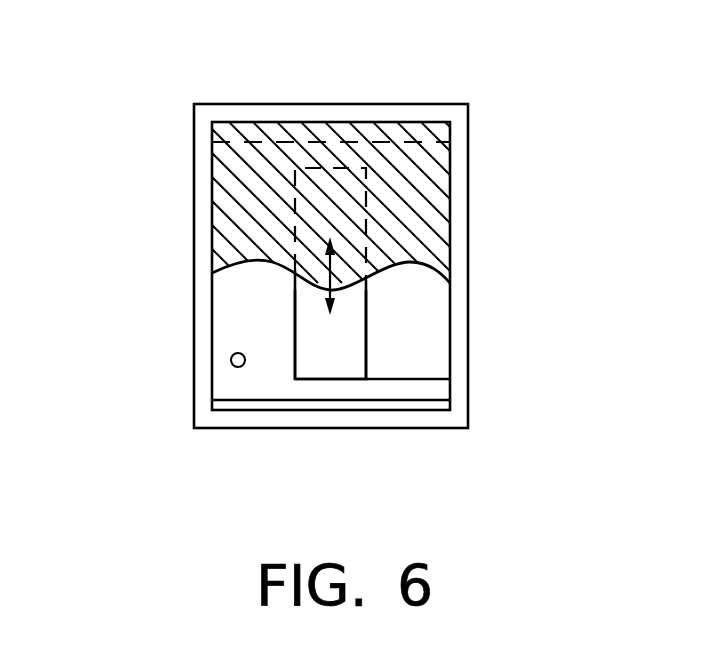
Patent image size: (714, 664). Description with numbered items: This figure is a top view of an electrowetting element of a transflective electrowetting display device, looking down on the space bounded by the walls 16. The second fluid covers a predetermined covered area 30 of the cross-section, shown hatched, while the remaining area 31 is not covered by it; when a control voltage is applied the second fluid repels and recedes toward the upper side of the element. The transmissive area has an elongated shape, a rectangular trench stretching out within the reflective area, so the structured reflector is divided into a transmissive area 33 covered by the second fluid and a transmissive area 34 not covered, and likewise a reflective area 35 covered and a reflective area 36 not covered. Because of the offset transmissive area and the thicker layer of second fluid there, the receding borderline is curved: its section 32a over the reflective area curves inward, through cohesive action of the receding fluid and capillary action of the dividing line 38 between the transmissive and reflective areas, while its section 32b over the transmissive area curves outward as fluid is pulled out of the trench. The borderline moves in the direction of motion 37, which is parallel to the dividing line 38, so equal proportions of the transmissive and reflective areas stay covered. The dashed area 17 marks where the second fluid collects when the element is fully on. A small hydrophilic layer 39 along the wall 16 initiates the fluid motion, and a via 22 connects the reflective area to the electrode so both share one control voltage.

The walls 16 is at (458, 138).
The collection area 17 is at (422, 132).
The via 22 is at (238, 367).
The covered area 30 is at (218, 187).
The uncovered area 31 is at (407, 353).
The inward curved borderline section 32a is at (413, 255).
The outward curved borderline section 32b is at (320, 290).
The covered transmissive area 33 is at (333, 197).
The uncovered transmissive area 34 is at (350, 360).
The covered reflective area 35 is at (238, 170).
The uncovered reflective area 36 is at (420, 332).
The direction of motion 37 is at (320, 292).
The dividing line 38 is at (293, 292).
The hydrophilic layer 39 is at (365, 405).